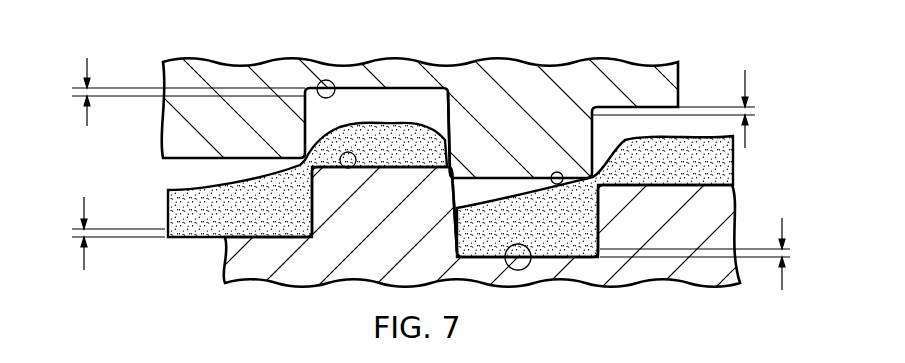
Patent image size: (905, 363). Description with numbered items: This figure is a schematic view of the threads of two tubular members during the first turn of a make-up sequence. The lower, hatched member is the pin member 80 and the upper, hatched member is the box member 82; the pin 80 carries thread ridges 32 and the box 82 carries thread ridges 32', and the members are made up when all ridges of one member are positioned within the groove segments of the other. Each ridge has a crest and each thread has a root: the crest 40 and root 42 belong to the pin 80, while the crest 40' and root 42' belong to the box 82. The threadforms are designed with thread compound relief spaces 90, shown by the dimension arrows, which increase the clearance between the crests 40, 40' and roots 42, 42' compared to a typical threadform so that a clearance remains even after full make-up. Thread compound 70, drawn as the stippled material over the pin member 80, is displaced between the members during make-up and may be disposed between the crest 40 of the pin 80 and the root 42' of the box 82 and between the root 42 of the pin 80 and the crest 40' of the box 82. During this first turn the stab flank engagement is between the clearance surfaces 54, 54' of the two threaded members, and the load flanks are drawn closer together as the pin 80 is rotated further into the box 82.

The ridges 32 is at (521, 225).
The ridges 32' is at (478, 122).
The crest 40 is at (348, 186).
The crest 40' is at (558, 158).
The root 42 is at (524, 292).
The root 42' is at (336, 55).
The clearance surface 54 is at (428, 212).
The clearance surface 54' is at (481, 133).
The thread compound 70 is at (171, 212).
The pin member 80 is at (234, 272).
The box member 82 is at (166, 140).
The thread compound relief spaces 90 is at (87, 60).